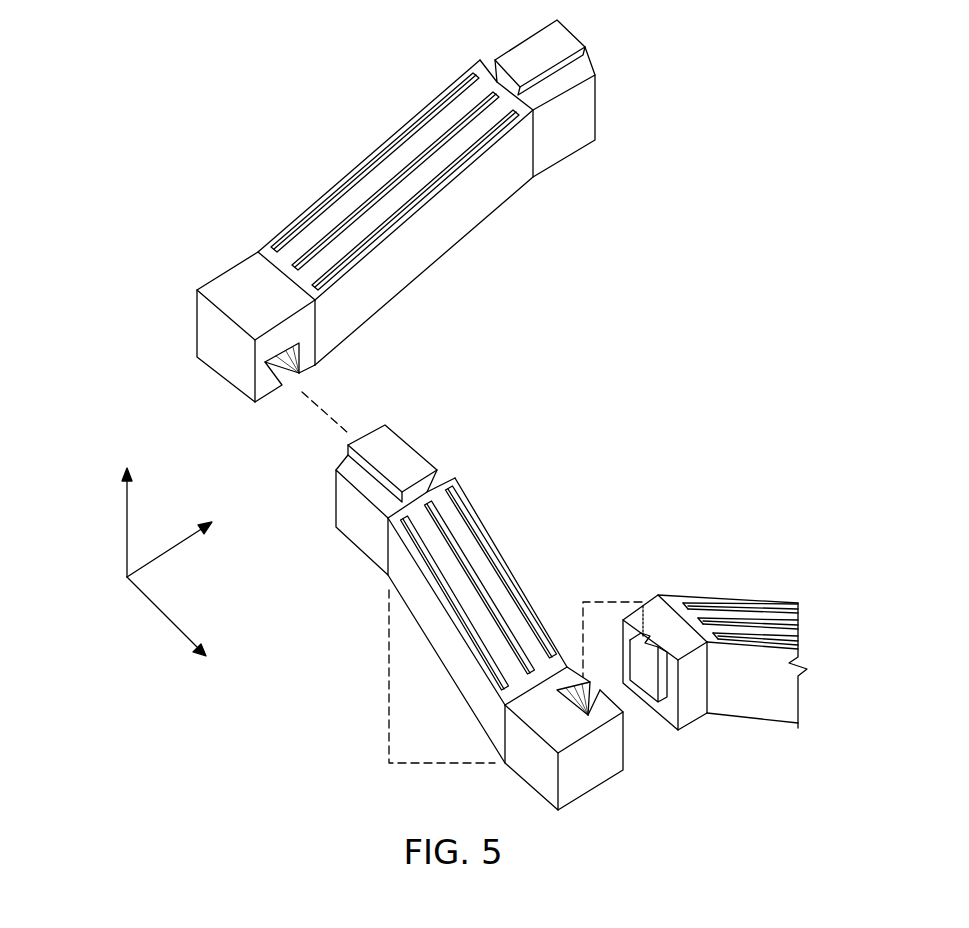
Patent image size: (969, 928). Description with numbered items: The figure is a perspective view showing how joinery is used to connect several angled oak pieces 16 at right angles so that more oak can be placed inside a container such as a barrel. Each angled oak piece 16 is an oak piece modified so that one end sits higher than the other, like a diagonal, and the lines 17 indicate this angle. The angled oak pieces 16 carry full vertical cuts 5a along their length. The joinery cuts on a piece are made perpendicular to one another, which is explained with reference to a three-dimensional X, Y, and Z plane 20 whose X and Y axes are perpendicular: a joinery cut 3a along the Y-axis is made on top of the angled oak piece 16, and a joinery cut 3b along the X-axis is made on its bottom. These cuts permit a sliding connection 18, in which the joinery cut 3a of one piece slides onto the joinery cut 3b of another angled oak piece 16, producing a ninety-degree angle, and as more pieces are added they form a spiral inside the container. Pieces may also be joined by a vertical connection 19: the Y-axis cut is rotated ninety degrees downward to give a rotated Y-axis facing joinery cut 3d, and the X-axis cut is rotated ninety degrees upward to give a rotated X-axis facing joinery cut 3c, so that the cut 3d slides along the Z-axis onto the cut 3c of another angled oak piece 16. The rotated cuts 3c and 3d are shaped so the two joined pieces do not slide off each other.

The angled oak piece 16 is at (457, 247).
The full vertical cuts 5a is at (412, 118).
The joinery cut along the Y-axis 3a is at (574, 36).
The joinery cut along the X-axis 3b is at (273, 395).
The rotated X-axis facing joinery cut 3c is at (601, 700).
The rotated Y-axis facing joinery cut 3d is at (643, 694).
The lines 17 is at (385, 693).
The sliding connection 18 is at (333, 420).
The vertical connection 19 is at (601, 600).
The X, Y, and Z plane 20 is at (165, 564).